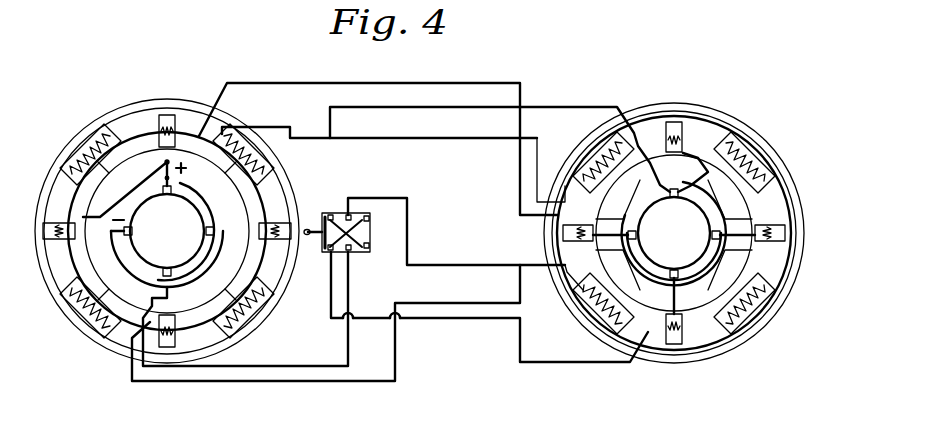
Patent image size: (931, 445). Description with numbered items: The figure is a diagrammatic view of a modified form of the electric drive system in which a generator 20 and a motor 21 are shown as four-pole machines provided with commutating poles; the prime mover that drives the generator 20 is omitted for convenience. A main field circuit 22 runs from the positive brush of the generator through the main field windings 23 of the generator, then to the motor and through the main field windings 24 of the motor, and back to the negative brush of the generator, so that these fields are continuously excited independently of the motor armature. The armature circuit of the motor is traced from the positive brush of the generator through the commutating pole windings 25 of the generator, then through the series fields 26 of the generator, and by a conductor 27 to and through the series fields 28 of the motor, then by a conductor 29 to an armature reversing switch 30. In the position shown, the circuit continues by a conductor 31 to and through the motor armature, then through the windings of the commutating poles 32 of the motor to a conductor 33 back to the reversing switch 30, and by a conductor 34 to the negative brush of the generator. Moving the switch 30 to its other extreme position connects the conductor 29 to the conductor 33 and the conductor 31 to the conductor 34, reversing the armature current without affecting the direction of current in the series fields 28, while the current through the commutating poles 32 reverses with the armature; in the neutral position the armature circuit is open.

The generator 20 is at (167, 214).
The motor 21 is at (674, 219).
The main field circuit 22 is at (150, 138).
The main field windings of the generator 23 is at (116, 168).
The main field windings of the motor 24 is at (628, 176).
The commutating pole windings of the generator 25 is at (172, 128).
The series fields of the generator 26 is at (85, 150).
The conductor 27 is at (465, 140).
The series fields of the motor 28 is at (585, 160).
The conductor 29 is at (462, 265).
The armature reversing switch 30 is at (371, 236).
The conductor 31 is at (447, 108).
The commutating poles of the motor 32 is at (673, 150).
The conductor 33 is at (456, 320).
The conductor 34 is at (296, 366).